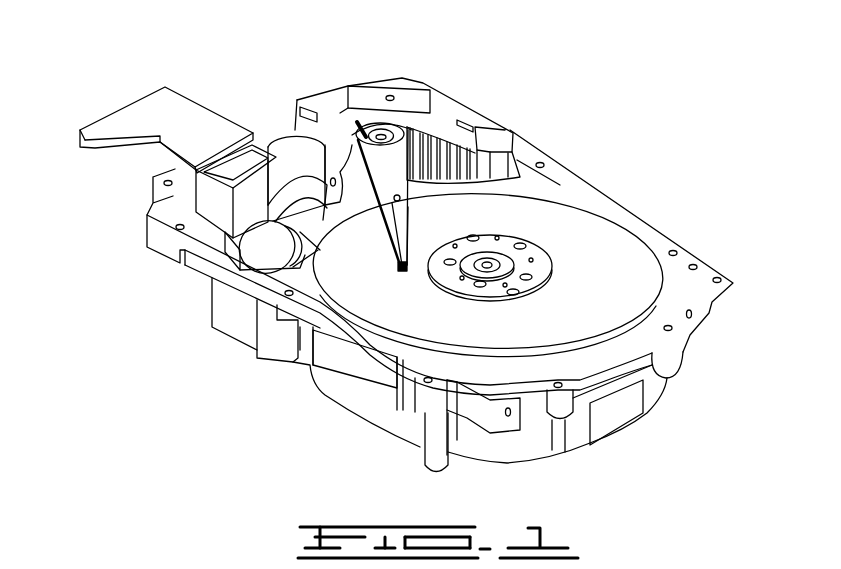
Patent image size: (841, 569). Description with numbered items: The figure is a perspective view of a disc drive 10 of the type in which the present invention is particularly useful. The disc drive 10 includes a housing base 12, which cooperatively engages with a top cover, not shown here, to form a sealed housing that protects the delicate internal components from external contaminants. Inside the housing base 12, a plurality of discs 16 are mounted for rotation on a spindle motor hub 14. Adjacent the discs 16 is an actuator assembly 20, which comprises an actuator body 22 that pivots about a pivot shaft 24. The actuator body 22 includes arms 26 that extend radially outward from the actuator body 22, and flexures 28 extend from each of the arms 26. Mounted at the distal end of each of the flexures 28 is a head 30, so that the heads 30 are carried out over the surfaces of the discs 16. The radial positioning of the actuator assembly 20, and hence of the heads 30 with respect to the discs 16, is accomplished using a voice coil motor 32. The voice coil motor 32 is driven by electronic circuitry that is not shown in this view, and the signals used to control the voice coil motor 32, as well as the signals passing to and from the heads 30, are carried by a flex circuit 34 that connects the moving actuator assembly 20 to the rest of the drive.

The disc drive 10 is at (136, 77).
The housing base 12 is at (324, 401).
The spindle motor hub 14 is at (507, 263).
The discs 16 is at (565, 203).
The actuator assembly 20 is at (365, 120).
The actuator body 22 is at (362, 122).
The pivot shaft 24 is at (417, 125).
The arms 26 is at (407, 182).
The flexures 28 is at (409, 250).
The head 30 is at (407, 272).
The voice coil motor 32 is at (444, 72).
The flex circuit 34 is at (288, 147).